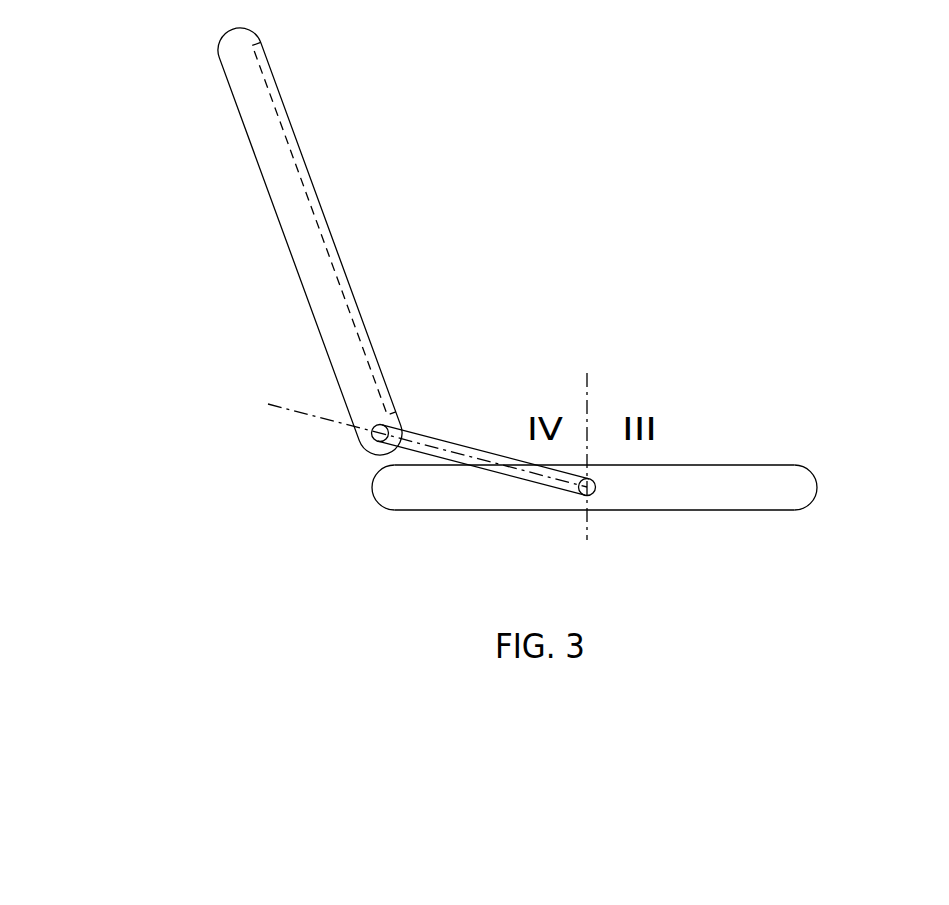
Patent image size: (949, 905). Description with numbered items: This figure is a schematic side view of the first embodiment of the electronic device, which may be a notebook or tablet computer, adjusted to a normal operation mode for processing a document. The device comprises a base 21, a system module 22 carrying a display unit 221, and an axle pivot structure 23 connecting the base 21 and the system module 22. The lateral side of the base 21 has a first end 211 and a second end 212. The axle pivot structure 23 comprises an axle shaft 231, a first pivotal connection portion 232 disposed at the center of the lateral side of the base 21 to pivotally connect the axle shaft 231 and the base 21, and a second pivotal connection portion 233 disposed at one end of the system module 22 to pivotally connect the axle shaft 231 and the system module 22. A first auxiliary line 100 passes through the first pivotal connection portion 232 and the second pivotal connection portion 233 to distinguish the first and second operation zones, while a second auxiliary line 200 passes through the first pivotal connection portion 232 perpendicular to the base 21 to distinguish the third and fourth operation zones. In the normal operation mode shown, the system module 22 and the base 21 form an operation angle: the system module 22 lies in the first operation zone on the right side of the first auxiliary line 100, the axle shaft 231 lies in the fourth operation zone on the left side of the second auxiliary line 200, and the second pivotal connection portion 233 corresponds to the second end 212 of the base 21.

The system module 22 is at (287, 241).
The display unit 221 is at (270, 97).
The first auxiliary line 100 is at (285, 405).
The axle pivot structure 23 is at (483, 413).
The axle shaft 231 is at (430, 430).
The first pivotal connection portion 232 is at (597, 493).
The second pivotal connection portion 233 is at (372, 437).
The second auxiliary line 200 is at (590, 392).
The base 21 is at (586, 474).
The first end 211 is at (800, 487).
The second end 212 is at (380, 488).